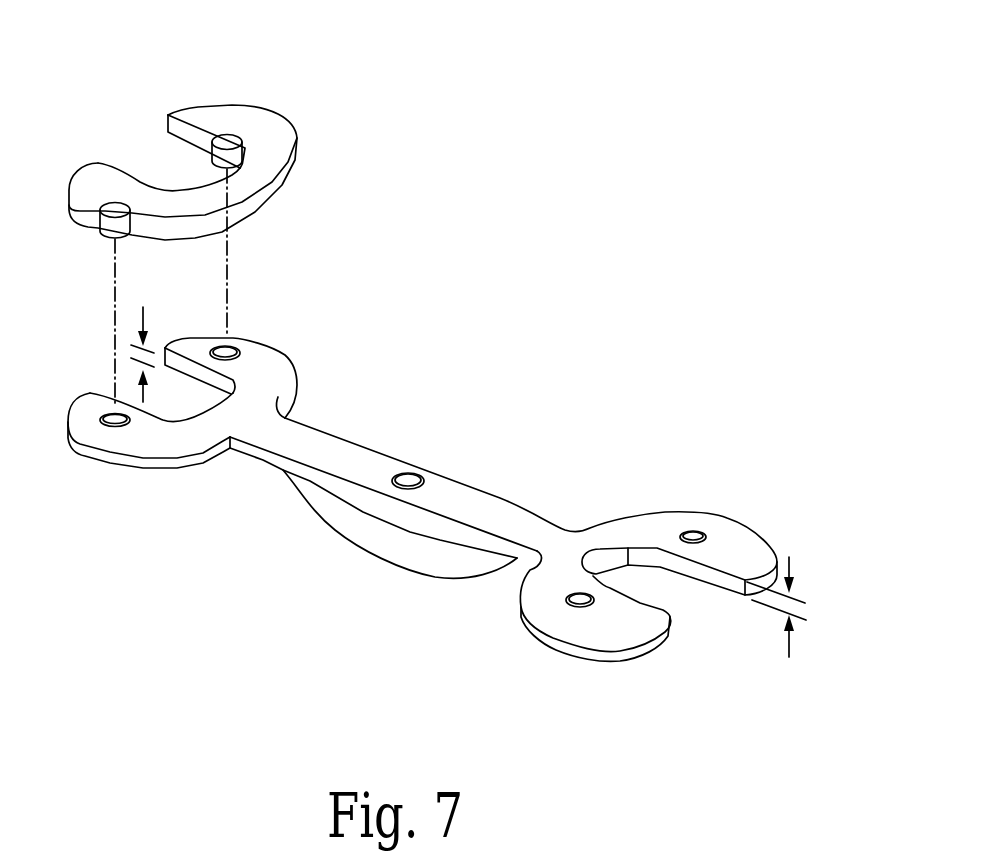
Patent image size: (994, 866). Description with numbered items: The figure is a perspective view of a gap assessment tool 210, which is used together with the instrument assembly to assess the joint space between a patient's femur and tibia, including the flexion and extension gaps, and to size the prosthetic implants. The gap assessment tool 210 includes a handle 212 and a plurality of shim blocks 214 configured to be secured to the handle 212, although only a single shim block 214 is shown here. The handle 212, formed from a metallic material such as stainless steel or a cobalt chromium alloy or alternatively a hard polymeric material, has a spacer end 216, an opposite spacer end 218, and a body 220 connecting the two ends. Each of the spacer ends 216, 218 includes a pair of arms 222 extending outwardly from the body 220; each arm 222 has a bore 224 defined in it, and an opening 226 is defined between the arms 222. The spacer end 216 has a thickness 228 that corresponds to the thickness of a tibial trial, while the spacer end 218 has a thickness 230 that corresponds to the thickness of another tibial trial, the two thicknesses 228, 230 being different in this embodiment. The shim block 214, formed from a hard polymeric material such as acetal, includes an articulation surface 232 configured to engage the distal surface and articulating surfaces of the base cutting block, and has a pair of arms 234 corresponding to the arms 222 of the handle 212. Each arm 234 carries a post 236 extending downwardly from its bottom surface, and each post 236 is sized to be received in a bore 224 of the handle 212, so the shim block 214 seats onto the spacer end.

The gap assessment tool 210 is at (573, 107).
The handle 212 is at (470, 418).
The shim block 214 is at (319, 124).
The spacer end 216 is at (170, 463).
The spacer end 218 is at (593, 651).
The body 220 is at (422, 524).
The arms 222 is at (257, 341).
The bore 224 is at (237, 343).
The opening 226 is at (210, 396).
The thickness 228 is at (146, 307).
The thickness 230 is at (789, 647).
The articulation surface 232 is at (196, 114).
The arms 234 is at (168, 115).
The post 236 is at (228, 135).